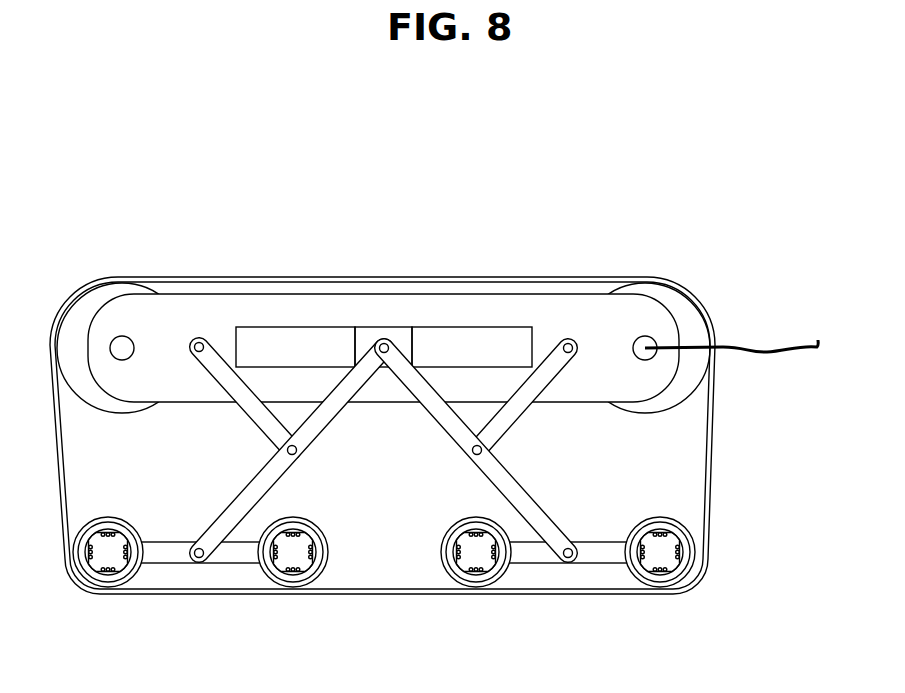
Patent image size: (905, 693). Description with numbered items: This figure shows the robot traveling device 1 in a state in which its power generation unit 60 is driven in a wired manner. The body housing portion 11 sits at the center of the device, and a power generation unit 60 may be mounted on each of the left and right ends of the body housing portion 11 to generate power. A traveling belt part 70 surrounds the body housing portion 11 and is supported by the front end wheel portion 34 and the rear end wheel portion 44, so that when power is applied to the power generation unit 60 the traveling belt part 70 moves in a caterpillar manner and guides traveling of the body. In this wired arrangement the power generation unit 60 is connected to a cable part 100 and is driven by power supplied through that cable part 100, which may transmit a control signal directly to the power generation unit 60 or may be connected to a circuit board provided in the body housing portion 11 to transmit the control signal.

The robot traveling device 1 is at (732, 133).
The body housing portion 11 is at (523, 303).
The front end wheel portion 34 is at (293, 589).
The rear end wheel portion 44 is at (478, 589).
The power generation unit 60 is at (672, 402).
The traveling belt part 70 is at (707, 504).
The cable part 100 is at (775, 350).